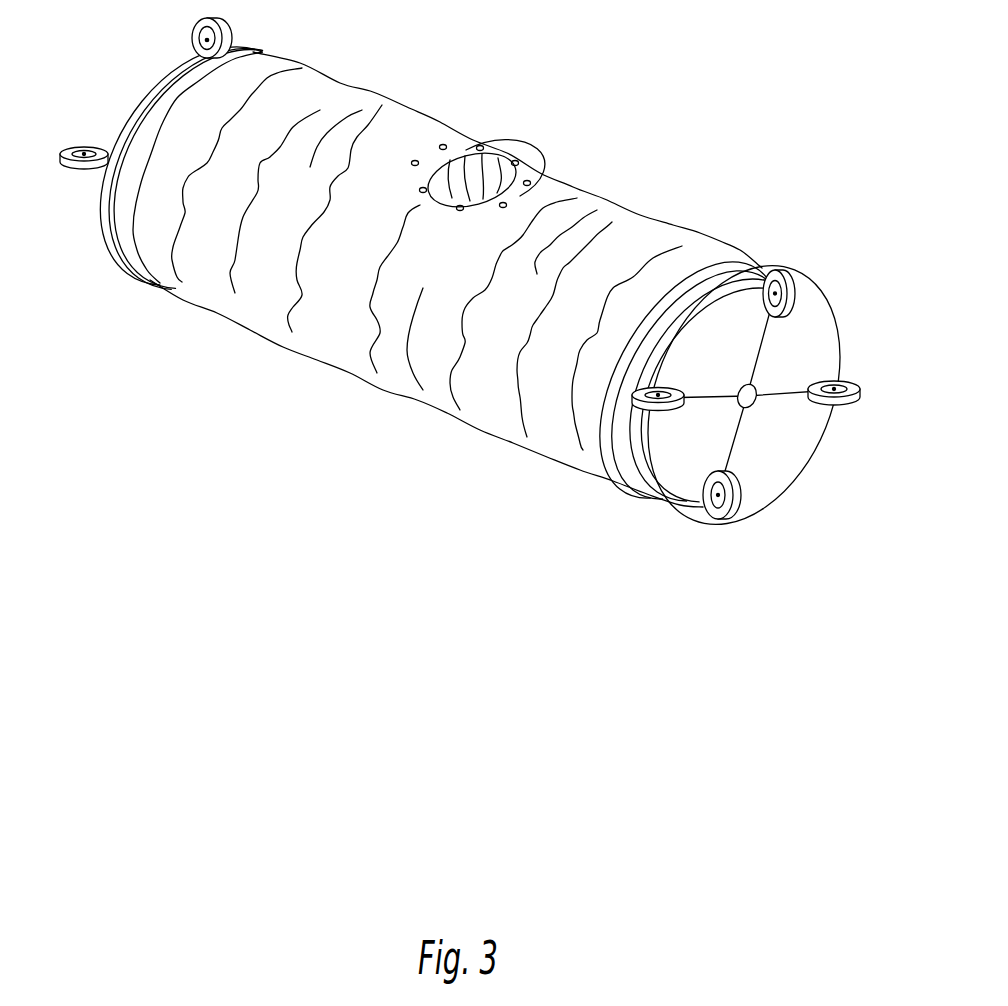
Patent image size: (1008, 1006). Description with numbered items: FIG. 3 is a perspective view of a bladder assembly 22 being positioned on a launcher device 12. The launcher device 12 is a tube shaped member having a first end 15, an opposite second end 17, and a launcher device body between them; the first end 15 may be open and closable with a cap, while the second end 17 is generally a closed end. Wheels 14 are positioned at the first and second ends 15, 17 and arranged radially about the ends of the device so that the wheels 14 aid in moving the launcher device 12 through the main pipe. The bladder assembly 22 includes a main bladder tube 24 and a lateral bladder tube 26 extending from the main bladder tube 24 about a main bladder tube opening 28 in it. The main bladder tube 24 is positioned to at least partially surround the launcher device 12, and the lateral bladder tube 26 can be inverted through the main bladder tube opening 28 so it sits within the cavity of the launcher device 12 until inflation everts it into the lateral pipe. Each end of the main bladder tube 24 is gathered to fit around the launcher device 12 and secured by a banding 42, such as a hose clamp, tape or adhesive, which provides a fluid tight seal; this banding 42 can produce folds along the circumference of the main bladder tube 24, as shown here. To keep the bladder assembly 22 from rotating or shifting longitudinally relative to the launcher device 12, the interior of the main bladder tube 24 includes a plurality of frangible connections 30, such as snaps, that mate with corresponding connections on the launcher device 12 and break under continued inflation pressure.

The launcher device 12 is at (753, 395).
The wheels 14 is at (199, 29).
The first end 15 is at (205, 156).
The second end 17 is at (769, 446).
The bladder assembly 22 is at (456, 279).
The main bladder tube 24 is at (374, 92).
The lateral bladder tube 26 is at (491, 163).
The main bladder tube opening 28 is at (518, 164).
The frangible connections 30 is at (446, 146).
The banding 42 is at (254, 53).